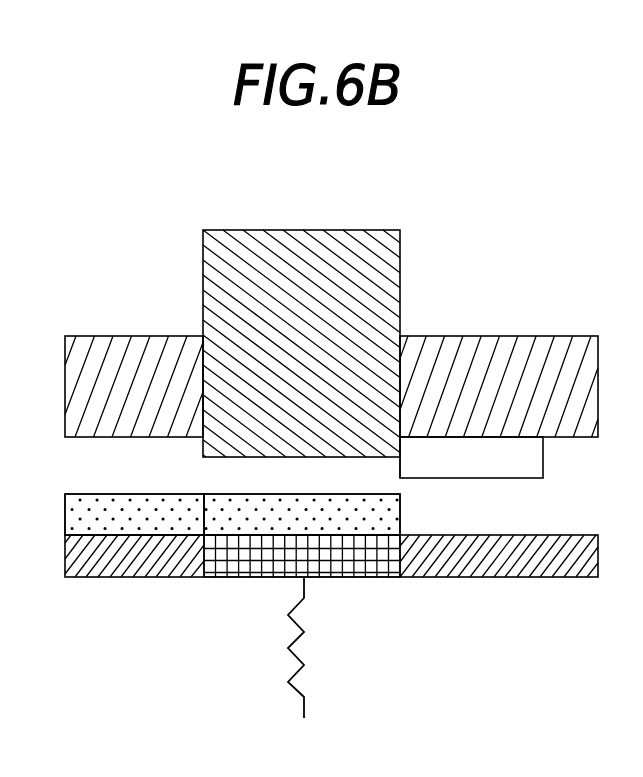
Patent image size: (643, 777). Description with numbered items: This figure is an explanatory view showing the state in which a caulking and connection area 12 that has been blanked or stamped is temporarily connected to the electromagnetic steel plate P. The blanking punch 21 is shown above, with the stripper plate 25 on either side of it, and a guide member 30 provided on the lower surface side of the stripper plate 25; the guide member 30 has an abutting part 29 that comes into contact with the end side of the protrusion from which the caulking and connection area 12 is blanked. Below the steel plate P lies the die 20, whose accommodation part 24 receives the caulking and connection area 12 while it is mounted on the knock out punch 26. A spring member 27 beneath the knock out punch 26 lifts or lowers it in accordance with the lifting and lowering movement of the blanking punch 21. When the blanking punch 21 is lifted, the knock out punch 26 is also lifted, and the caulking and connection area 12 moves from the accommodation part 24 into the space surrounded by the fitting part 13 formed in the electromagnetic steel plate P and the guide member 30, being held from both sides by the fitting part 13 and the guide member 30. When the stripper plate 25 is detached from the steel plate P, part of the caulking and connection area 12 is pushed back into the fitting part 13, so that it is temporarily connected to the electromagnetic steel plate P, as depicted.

The blanking punch 21 is at (295, 229).
The stripper plate 25 is at (128, 336).
The guide member 30 is at (517, 458).
The fitting part 13 is at (205, 518).
The electromagnetic steel plate P is at (75, 518).
The caulking and connection area 12 is at (352, 527).
The abutting part 29 is at (398, 463).
The die 20 is at (123, 578).
The accommodation part 24 is at (220, 555).
The knock out punch 26 is at (250, 567).
The spring member 27 is at (293, 660).